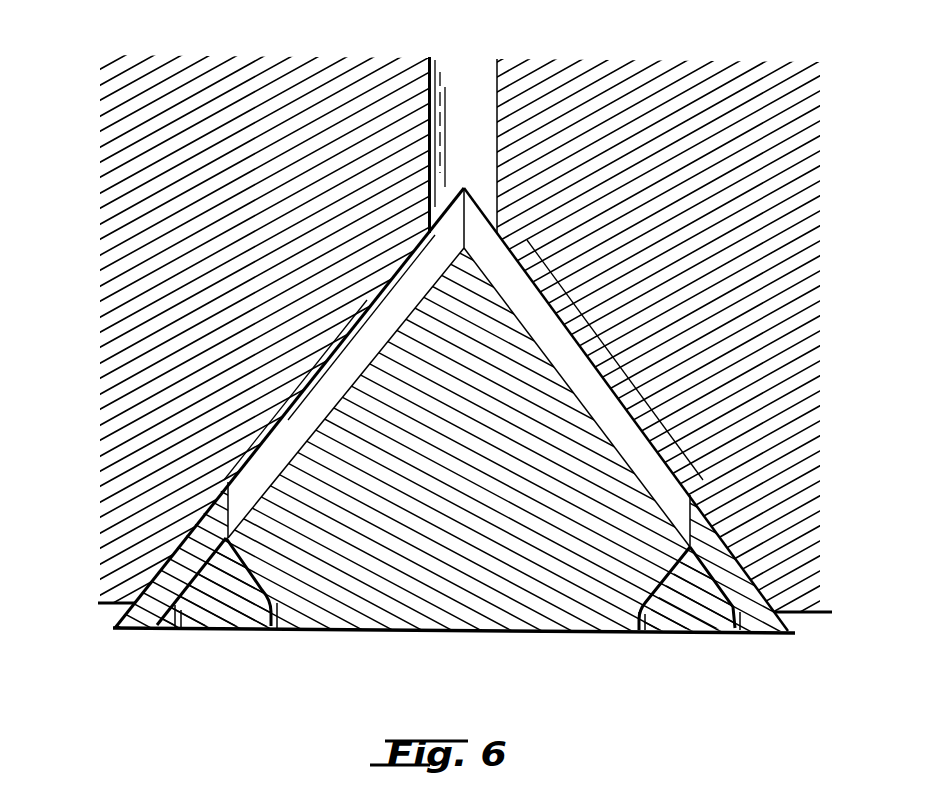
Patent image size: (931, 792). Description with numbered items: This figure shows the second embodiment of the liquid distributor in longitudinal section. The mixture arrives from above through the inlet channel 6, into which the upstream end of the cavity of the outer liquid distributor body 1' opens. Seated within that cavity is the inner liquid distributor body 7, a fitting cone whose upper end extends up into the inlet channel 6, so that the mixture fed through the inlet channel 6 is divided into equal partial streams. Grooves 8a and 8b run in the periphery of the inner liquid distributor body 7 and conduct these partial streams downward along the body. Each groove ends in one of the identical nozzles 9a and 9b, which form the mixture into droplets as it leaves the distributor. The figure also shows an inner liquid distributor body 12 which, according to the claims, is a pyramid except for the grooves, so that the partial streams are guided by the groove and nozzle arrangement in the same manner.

The outer liquid distributor body 1' is at (463, 393).
The inlet channel 6 is at (478, 93).
The inner liquid distributor body 7 is at (468, 607).
The groove 8a is at (588, 390).
The groove 8b is at (332, 382).
The nozzle 9a is at (277, 618).
The nozzle 9b is at (177, 617).
The inner liquid distributor body 12 is at (229, 603).